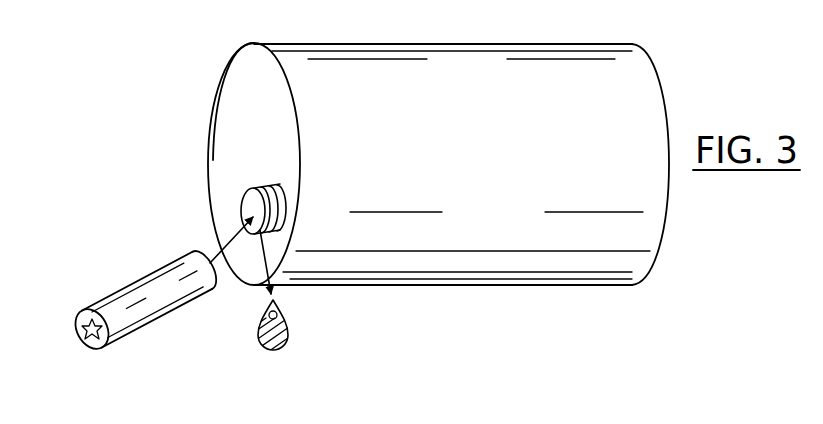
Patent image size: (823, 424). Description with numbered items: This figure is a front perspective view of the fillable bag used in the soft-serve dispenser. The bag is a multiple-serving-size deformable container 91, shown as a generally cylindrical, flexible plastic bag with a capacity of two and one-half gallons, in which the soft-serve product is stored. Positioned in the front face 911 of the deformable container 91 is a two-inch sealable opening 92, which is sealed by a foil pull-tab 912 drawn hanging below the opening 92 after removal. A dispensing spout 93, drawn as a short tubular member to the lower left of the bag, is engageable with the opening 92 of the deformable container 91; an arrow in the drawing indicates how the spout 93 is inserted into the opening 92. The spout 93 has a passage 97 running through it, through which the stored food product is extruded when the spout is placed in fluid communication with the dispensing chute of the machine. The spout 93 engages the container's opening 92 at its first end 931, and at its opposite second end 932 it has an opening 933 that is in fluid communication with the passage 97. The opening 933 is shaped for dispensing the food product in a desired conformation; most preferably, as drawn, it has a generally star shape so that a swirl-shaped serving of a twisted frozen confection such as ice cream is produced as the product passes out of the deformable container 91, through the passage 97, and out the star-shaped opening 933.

The deformable container 91 is at (473, 163).
The front face 911 is at (245, 98).
The opening 92 is at (250, 212).
The foil pull-tab 912 is at (290, 327).
The dispensing spout 93 is at (116, 266).
The first end 931 is at (203, 248).
The second end 932 is at (112, 296).
The opening 933 is at (82, 333).
The passage 97 is at (142, 300).